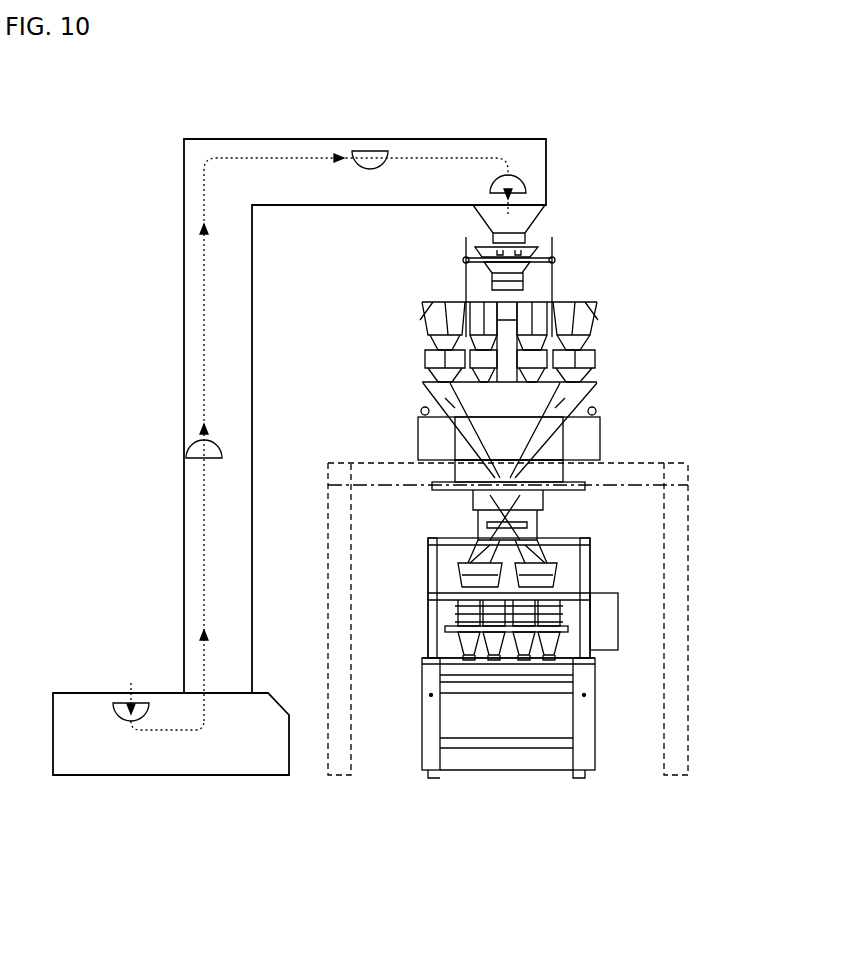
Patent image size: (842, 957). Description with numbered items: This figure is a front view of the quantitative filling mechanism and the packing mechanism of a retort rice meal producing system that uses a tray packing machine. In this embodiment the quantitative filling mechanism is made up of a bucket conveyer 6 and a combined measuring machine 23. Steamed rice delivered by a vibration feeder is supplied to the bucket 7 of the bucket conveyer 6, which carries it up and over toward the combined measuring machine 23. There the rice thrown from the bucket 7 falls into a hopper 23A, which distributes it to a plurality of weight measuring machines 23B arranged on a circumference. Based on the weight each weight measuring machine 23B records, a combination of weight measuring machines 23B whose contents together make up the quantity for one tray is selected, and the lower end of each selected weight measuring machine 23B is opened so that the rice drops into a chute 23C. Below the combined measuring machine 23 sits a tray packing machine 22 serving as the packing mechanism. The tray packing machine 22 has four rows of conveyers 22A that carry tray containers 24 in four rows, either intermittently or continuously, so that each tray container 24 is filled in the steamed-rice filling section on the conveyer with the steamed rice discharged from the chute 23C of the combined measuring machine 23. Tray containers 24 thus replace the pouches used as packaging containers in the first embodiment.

The bucket conveyer 6 is at (158, 313).
The bucket 7 is at (370, 150).
The tray packing machine 22 is at (655, 622).
The conveyers 22A is at (462, 657).
The combined measuring machine 23 is at (655, 274).
The hopper 23A is at (533, 248).
The weight measuring machines 23B is at (565, 362).
The chute 23C is at (548, 435).
The tray containers 24 is at (465, 652).